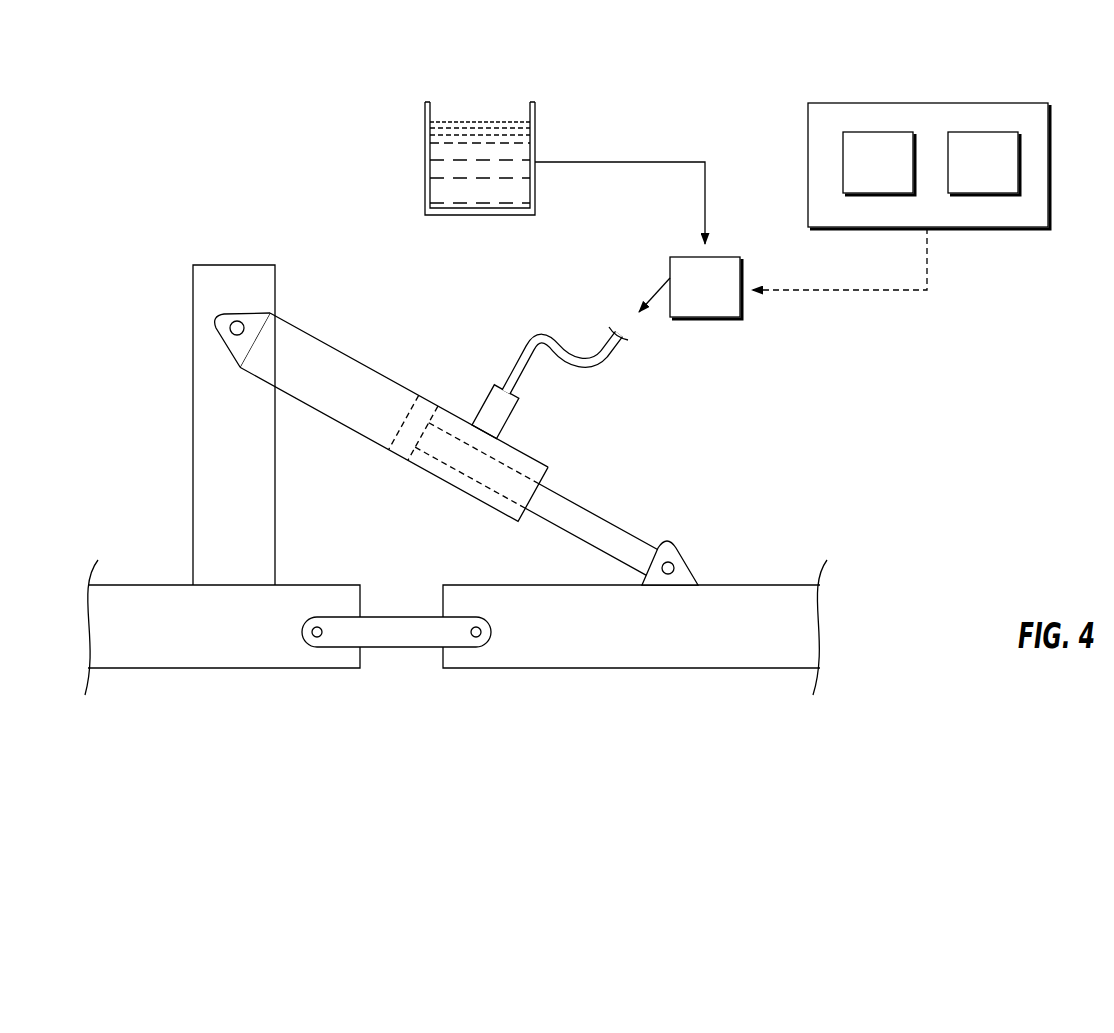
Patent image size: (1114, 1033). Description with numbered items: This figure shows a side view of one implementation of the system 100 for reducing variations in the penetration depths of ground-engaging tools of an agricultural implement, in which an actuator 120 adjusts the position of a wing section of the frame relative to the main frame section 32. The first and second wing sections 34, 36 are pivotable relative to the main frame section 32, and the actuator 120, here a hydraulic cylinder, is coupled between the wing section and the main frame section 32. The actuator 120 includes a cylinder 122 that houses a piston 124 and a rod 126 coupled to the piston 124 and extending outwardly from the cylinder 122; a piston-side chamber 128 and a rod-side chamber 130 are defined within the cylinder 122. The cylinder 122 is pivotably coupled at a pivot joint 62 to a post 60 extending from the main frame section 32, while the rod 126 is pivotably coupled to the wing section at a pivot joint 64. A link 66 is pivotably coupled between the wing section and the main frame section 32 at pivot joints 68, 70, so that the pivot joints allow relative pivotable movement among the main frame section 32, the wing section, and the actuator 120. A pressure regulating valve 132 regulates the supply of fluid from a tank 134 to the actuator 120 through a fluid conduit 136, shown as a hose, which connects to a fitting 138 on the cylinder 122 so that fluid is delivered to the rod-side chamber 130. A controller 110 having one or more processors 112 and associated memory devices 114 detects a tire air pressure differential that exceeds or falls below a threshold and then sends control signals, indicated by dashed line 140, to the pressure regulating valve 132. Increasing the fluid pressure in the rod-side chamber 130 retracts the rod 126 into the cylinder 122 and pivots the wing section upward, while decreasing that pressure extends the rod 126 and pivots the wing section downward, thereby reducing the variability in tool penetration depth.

The system 100 is at (145, 175).
The controller 110 is at (929, 135).
The processor 112 is at (897, 176).
The memory device 114 is at (1002, 176).
The actuator 120 is at (354, 264).
The cylinder 122 is at (405, 415).
The piston 124 is at (405, 451).
The rod 126 is at (607, 522).
The piston-side chamber 128 is at (353, 410).
The rod-side chamber 130 is at (468, 482).
The pressure regulating valve 132 is at (745, 317).
The tank 134 is at (428, 164).
The fluid conduit 136 is at (553, 338).
The fitting 138 is at (507, 423).
The control signals 140 is at (928, 262).
The post 60 is at (203, 468).
The pivot joint 62 is at (236, 320).
The pivot joint 64 is at (673, 552).
The link 66 is at (390, 637).
The pivot joint 68 is at (314, 640).
The pivot joint 70 is at (478, 638).
The main frame section 32 is at (183, 660).
The first wing section 34 is at (635, 640).
The second wing section 36 is at (647, 660).